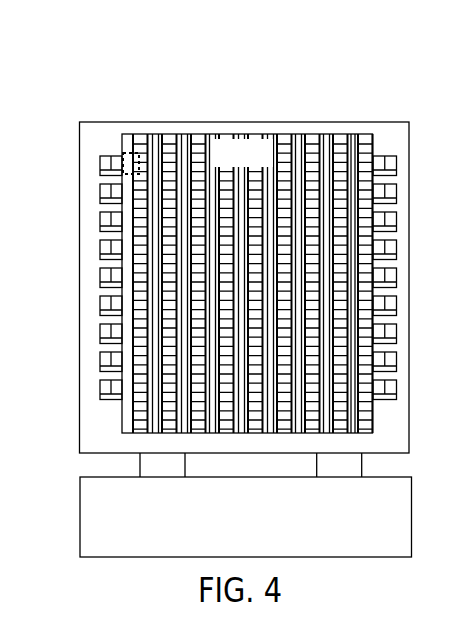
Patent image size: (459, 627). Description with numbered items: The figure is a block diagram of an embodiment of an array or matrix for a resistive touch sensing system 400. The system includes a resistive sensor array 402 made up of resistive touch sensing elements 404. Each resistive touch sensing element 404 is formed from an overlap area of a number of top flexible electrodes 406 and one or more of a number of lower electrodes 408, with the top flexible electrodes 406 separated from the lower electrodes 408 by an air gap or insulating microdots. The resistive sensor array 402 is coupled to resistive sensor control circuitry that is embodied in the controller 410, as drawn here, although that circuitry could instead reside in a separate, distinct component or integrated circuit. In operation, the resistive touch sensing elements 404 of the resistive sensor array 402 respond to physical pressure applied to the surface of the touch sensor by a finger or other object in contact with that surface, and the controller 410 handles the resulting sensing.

The resistive touch sensing system 400 is at (223, 292).
The resistive sensor array 402 is at (260, 164).
The resistive touch sensing element 404 is at (122, 155).
The top flexible electrode 406 is at (136, 134).
The lower electrode 408 is at (100, 405).
The controller 410 is at (280, 526).